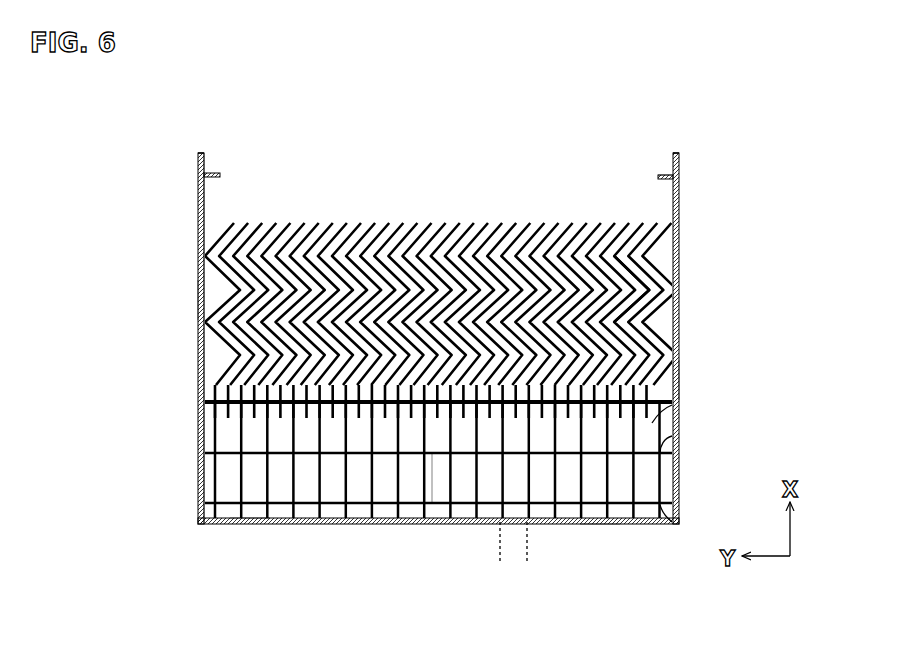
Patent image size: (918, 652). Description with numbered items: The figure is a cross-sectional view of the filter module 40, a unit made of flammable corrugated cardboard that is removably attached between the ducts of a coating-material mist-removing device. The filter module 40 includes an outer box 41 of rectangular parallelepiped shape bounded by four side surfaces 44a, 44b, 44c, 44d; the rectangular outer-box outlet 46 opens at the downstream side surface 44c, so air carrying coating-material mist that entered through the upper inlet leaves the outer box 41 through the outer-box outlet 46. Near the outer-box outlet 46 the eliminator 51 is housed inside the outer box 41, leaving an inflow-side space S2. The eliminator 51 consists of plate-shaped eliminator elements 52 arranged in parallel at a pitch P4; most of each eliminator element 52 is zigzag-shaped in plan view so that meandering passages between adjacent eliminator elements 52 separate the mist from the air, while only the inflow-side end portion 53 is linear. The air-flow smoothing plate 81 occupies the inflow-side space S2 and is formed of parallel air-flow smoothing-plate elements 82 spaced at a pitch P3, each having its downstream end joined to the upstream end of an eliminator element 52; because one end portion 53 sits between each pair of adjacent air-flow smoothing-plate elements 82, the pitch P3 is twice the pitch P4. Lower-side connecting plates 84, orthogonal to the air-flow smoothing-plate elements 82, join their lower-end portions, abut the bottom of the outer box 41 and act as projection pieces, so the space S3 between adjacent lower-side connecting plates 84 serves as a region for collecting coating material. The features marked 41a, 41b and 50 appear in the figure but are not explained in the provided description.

The filter module 40 is at (157, 124).
The outer box 41 is at (198, 226).
The flange portion 41a is at (658, 179).
The bottom wall 41b is at (248, 518).
The side surface 44a is at (603, 524).
The side surface 44b is at (680, 378).
The side surface 44c is at (665, 174).
The side surface 44d is at (197, 298).
The outer-box outlet 46 is at (215, 172).
The open end 50 is at (198, 160).
The eliminator 51 is at (412, 224).
The eliminator element 52 is at (620, 307).
The end portion 53 is at (385, 406).
The air-flow smoothing plate 81 is at (208, 484).
The air-flow smoothing-plate element 82 is at (335, 521).
The lower-side connecting plate 84 is at (672, 443).
The inflow-side space S2 is at (432, 492).
The space S3 is at (226, 433).
The pitch P3 is at (545, 553).
The pitch P4 is at (610, 432).